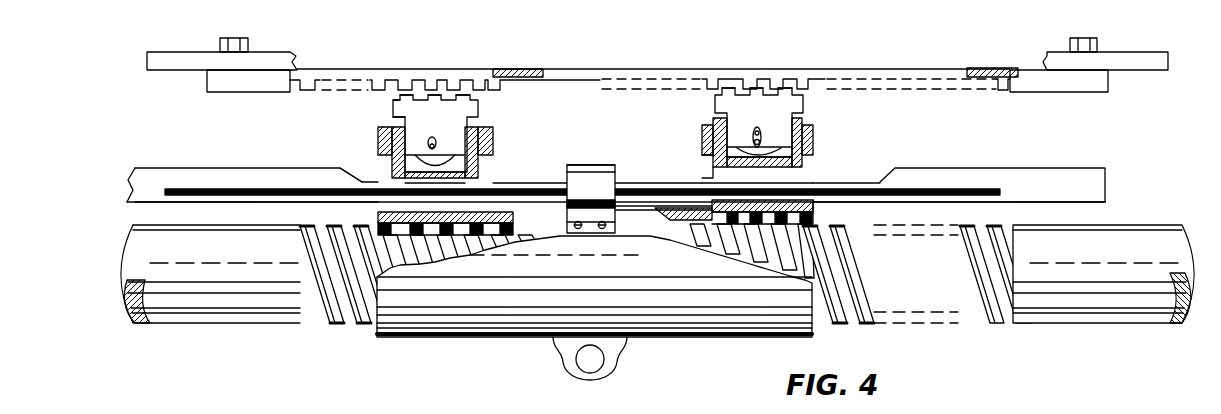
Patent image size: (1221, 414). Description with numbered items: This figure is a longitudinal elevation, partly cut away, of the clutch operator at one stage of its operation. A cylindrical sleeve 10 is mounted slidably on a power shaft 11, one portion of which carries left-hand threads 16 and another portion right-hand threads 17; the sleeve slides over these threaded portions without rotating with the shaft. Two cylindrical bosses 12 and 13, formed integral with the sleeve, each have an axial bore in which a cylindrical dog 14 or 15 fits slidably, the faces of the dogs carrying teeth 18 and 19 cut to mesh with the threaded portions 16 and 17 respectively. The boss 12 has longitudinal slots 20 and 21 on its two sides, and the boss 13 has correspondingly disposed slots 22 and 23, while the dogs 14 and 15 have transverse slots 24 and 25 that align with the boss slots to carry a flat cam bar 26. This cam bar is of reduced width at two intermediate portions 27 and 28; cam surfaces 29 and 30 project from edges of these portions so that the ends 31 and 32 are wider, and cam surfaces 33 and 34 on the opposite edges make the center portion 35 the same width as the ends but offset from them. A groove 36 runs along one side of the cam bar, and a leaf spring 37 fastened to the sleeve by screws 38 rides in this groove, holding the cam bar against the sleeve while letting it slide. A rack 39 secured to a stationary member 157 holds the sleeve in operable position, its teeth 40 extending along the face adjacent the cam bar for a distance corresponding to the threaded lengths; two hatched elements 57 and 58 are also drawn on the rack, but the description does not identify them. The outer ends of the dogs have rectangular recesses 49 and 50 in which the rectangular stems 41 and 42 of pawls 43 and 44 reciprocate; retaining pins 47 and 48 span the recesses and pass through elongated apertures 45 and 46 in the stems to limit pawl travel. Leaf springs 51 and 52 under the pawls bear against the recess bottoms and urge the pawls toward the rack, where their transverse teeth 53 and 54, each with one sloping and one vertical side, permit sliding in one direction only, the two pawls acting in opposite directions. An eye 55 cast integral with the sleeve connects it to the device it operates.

The cylindrical sleeve 10 is at (756, 338).
The power shaft 11 is at (242, 325).
The cylindrical boss 12 is at (378, 139).
The cylindrical boss 13 is at (814, 145).
The dog 14 is at (476, 127).
The dog 15 is at (713, 123).
The left-hand threads 16 is at (350, 328).
The right-hand threads 17 is at (865, 326).
The teeth 18 is at (384, 221).
The teeth 19 is at (814, 210).
The longitudinal slot 20 is at (392, 166).
The longitudinal slot 21 is at (490, 166).
The longitudinal slot 22 is at (706, 178).
The longitudinal slot 23 is at (792, 170).
The transverse slot 24 is at (465, 184).
The transverse slot 25 is at (668, 207).
The cam bar 26 is at (1131, 178).
The intermediate portion 27 is at (360, 203).
The intermediate portion 28 is at (657, 172).
The cam surface 29 is at (355, 168).
The cam surface 30 is at (742, 173).
The end of cam bar 31 is at (228, 177).
The end of cam bar 32 is at (1019, 175).
The cam surface 33 is at (437, 207).
The cam surface 34 is at (667, 224).
The center portion 35 is at (568, 172).
The groove 36 is at (934, 188).
The leaf spring 37 is at (608, 165).
The screws 38 is at (595, 229).
The rack 39 is at (262, 78).
The teeth 40 is at (493, 84).
The stem 41 is at (400, 114).
The stem 42 is at (803, 125).
The pawl 43 is at (398, 107).
The pawl 44 is at (804, 106).
The elongated aperture 45 is at (434, 139).
The elongated aperture 46 is at (758, 128).
The retaining pin 47 is at (436, 146).
The retaining pin 48 is at (702, 136).
The rectangular recess 49 is at (493, 144).
The rectangular recess 50 is at (714, 156).
The leaf spring 51 is at (424, 158).
The leaf spring 52 is at (761, 152).
The teeth 53 is at (423, 102).
The teeth 54 is at (774, 93).
The eye 55 is at (622, 369).
The pad 57 is at (531, 70).
The pad 58 is at (1003, 68).
The stationary member 157 is at (170, 51).